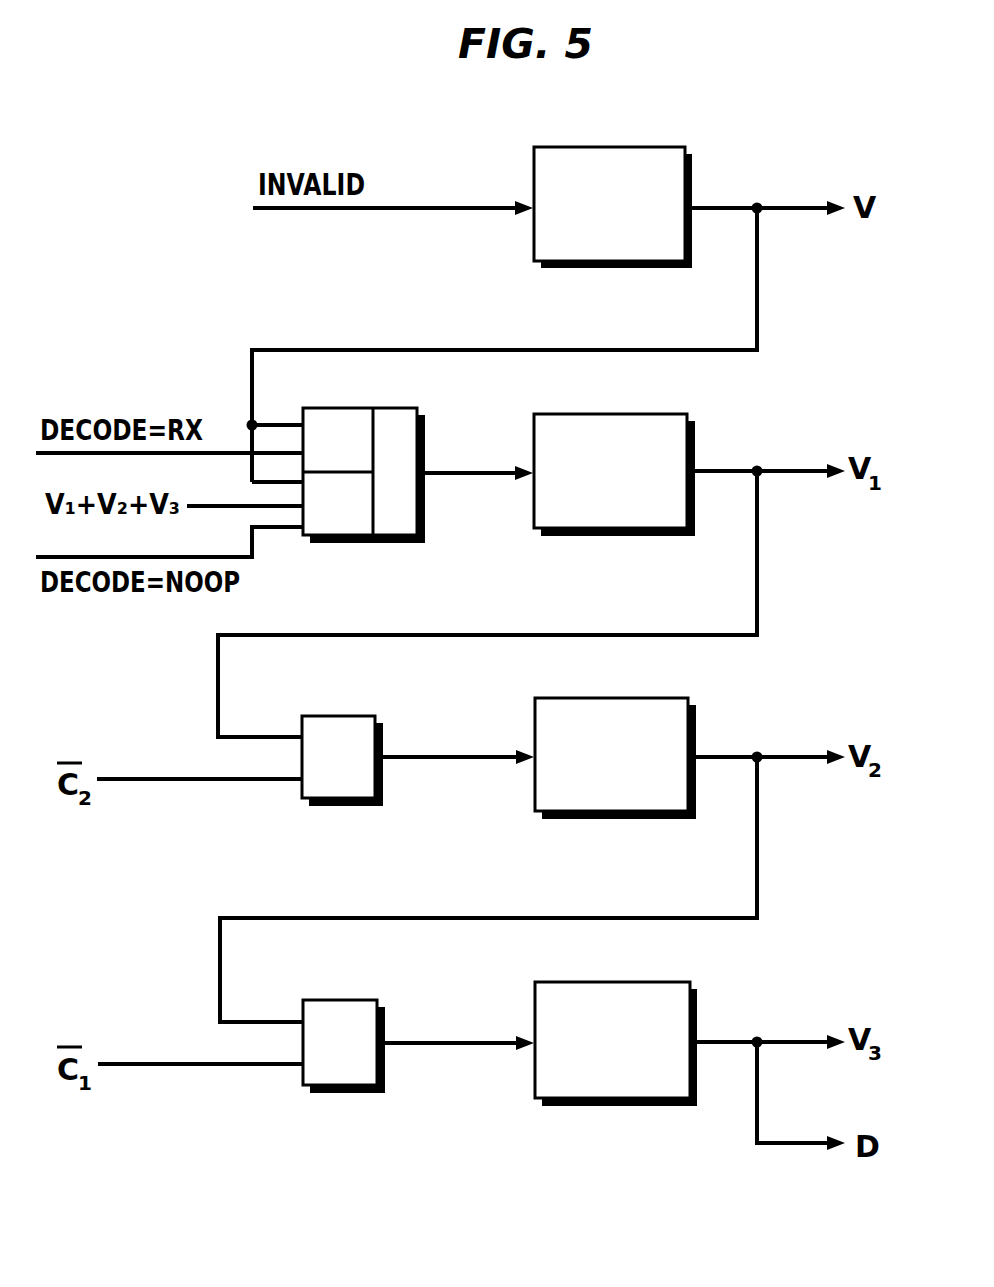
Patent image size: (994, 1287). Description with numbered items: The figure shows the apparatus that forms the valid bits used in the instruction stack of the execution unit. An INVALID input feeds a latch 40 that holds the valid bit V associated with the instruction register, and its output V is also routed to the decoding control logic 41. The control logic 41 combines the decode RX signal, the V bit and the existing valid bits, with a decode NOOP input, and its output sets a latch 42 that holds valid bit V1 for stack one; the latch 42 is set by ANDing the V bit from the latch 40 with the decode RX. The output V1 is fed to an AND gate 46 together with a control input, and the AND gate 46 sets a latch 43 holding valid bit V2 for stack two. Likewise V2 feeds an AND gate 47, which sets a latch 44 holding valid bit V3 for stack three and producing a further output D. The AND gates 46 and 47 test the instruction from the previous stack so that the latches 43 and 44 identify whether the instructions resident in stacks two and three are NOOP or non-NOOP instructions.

The latch 40 is at (630, 266).
The control logic 41 is at (350, 543).
The latch 42 is at (630, 534).
The latch 43 is at (620, 818).
The latch 44 is at (630, 1105).
The AND gate 46 is at (333, 806).
The AND gate 47 is at (345, 1093).